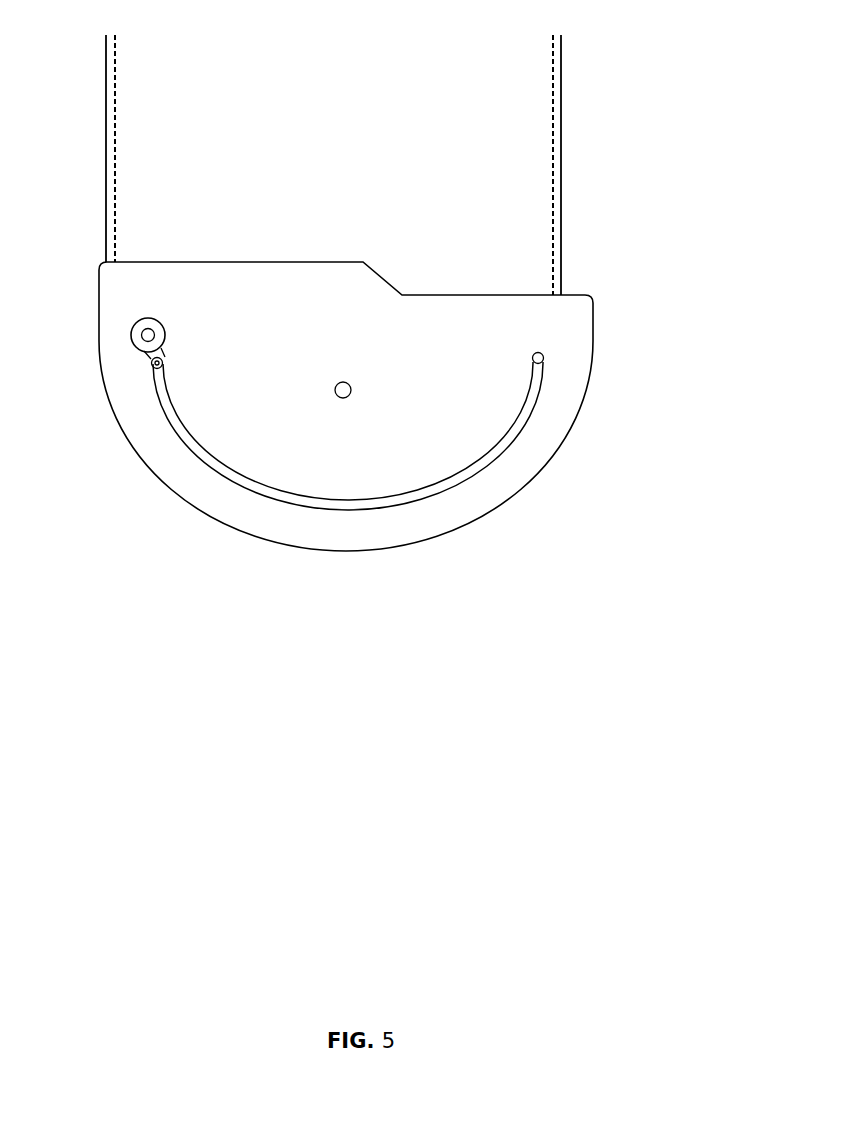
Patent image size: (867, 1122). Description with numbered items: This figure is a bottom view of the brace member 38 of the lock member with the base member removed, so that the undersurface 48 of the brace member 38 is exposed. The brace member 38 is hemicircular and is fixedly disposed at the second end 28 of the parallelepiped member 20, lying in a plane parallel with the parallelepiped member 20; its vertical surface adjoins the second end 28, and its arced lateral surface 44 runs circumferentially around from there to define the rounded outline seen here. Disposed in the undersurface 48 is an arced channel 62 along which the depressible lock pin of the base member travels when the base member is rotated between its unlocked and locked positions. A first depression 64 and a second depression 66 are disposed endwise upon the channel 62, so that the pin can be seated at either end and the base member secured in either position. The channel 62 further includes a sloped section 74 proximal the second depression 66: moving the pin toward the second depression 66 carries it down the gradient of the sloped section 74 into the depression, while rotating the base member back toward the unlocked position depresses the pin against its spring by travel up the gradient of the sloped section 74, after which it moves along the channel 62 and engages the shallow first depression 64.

The parallelepiped member 20 is at (561, 193).
The second end 28 is at (561, 65).
The brace member 38 is at (708, 312).
The arced lateral surface 44 is at (443, 537).
The undersurface 48 is at (562, 392).
The arced channel 62 is at (465, 478).
The first depression 64 is at (541, 352).
The second depression 66 is at (133, 340).
The sloped section 74 is at (152, 367).